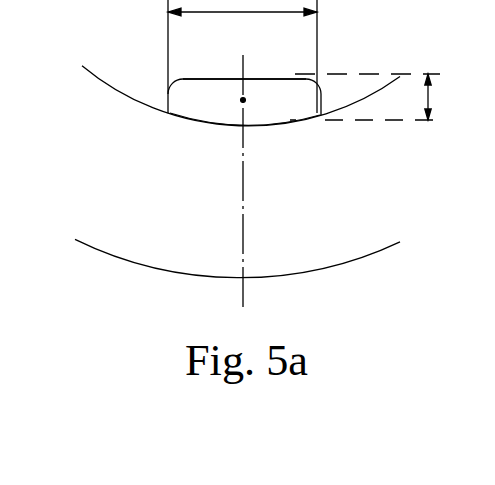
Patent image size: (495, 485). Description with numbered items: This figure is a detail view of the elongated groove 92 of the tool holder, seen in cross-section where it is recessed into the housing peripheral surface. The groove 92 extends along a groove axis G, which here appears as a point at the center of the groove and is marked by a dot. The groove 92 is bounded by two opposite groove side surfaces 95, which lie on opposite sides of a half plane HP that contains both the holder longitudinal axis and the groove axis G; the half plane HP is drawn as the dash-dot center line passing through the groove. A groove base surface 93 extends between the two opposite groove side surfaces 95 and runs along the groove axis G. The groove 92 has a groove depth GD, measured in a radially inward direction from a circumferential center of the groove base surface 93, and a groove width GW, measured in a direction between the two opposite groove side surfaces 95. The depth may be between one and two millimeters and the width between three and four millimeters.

The groove 92 is at (218, 92).
The groove base surface 93 is at (230, 80).
The groove side surfaces 95 is at (173, 96).
The groove axis G is at (245, 99).
The groove width GW is at (225, 13).
The groove depth GD is at (430, 93).
The half plane HP is at (243, 198).